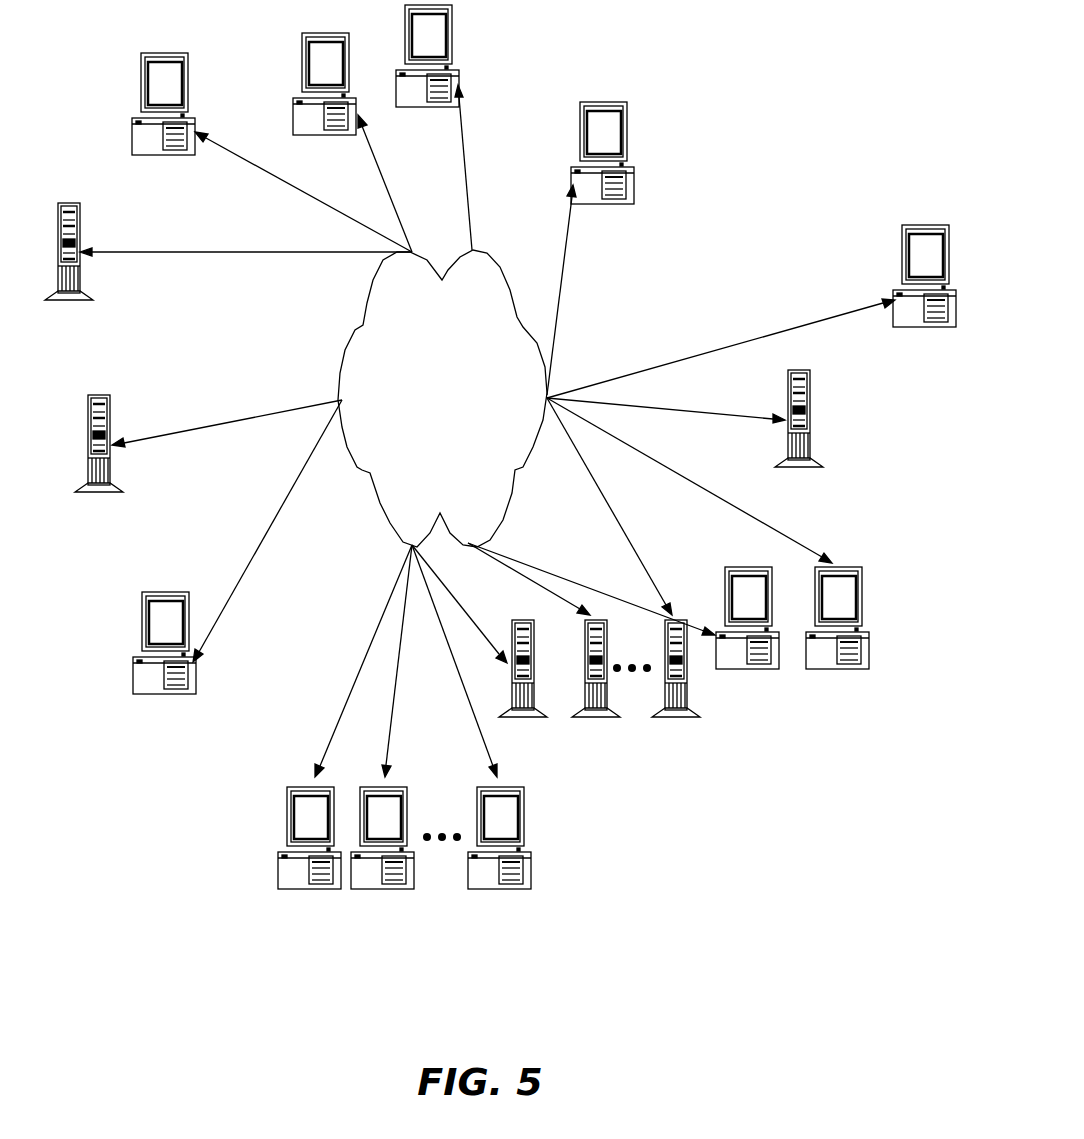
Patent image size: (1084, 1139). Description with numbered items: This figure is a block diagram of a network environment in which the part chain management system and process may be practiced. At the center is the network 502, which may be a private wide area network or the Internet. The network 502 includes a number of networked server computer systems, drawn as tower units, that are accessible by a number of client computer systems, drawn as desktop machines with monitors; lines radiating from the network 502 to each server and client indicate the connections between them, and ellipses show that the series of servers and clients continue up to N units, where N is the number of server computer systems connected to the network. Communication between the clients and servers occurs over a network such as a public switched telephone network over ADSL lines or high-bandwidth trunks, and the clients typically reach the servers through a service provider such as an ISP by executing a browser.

The network 502 is at (442, 398).